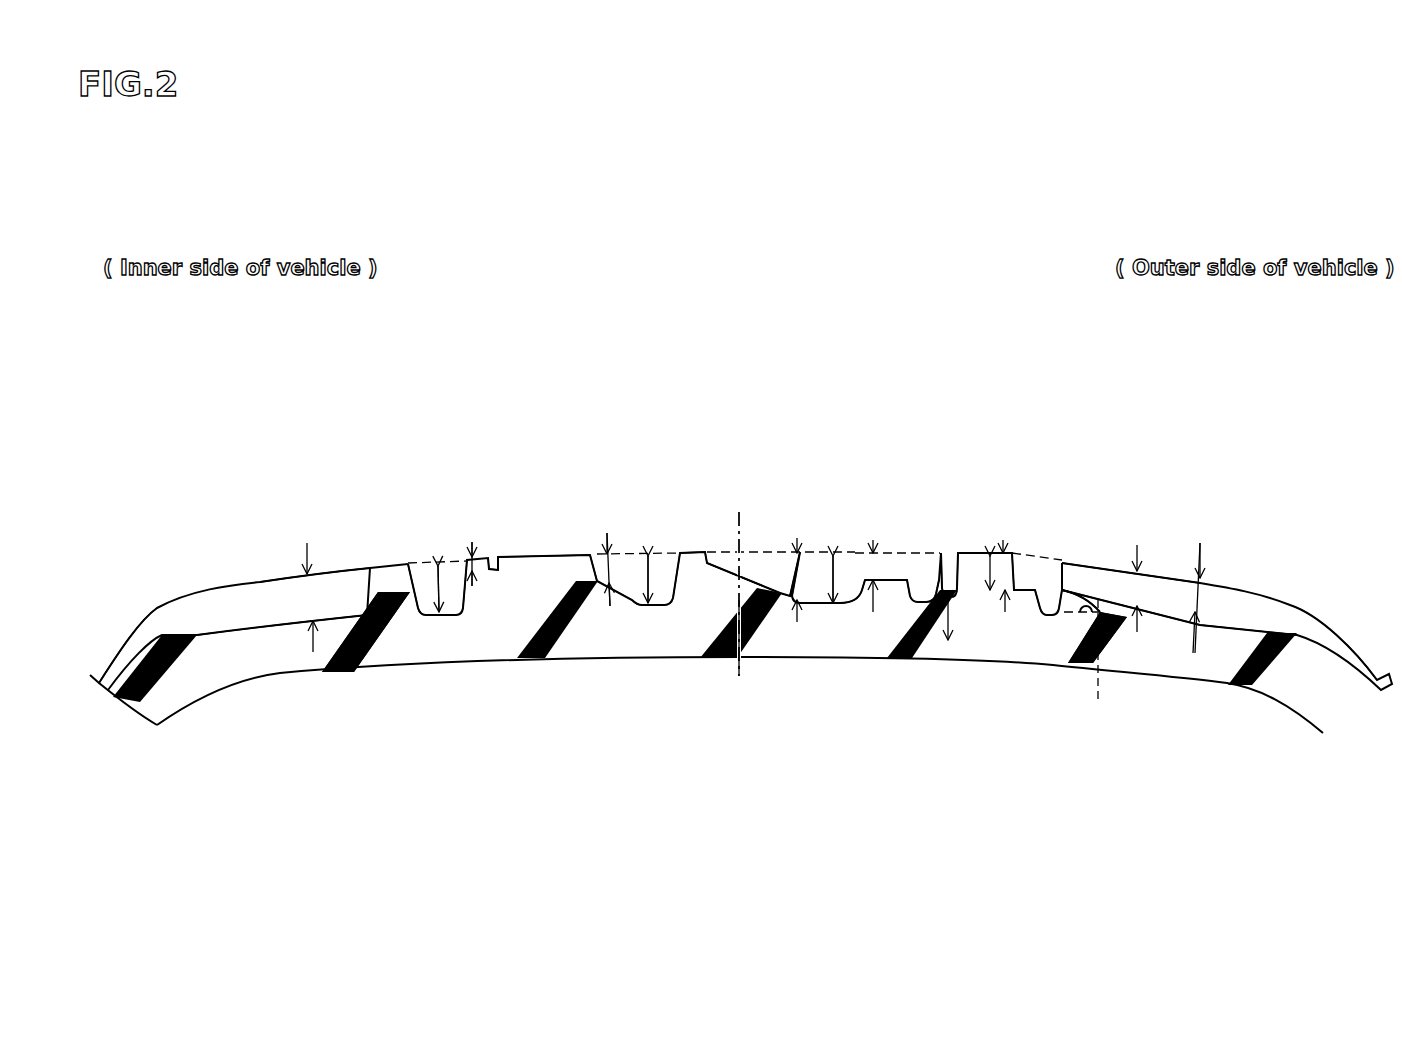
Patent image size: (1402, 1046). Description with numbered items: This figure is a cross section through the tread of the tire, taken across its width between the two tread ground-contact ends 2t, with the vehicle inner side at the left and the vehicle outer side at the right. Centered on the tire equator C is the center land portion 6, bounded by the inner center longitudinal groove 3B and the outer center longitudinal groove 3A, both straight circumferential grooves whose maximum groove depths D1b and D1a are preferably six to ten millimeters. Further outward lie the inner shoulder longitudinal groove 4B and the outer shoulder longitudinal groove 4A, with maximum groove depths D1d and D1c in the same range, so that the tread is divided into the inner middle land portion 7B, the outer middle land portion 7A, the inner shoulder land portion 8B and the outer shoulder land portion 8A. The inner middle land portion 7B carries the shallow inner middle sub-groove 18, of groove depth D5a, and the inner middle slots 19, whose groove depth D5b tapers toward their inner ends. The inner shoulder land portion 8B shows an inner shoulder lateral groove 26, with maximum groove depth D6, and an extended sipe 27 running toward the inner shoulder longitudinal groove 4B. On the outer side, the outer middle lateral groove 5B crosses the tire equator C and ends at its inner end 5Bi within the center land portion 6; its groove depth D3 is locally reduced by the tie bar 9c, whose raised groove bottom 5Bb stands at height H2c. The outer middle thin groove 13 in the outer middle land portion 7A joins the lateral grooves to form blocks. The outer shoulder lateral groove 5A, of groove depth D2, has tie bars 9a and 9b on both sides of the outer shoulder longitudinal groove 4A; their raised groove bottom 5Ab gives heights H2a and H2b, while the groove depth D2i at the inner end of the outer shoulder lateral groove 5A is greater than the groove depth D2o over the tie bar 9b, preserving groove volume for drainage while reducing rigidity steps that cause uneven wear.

The tread ground-contact end 2t is at (168, 620).
The inner shoulder lateral groove 26 is at (243, 622).
The extended sipe 27 is at (370, 590).
The inner shoulder land portion 8B is at (350, 527).
The inner shoulder longitudinal groove 4B is at (440, 562).
The inner middle sub-groove 18 is at (494, 560).
The inner middle land portion 7B is at (565, 532).
The inner middle slot 19 is at (603, 553).
The inner center longitudinal groove 3B is at (663, 582).
The inner end of outer middle lateral groove 5Bi is at (714, 572).
The center land portion 6 is at (748, 525).
The outer middle lateral groove 5B is at (790, 566).
The outer center longitudinal groove 3A is at (850, 582).
The tie bar 9c is at (897, 578).
The outer middle thin groove 13 is at (948, 552).
The outer middle land portion 7A is at (975, 532).
The tie bar 9b is at (1036, 565).
The outer shoulder longitudinal groove 4A is at (1053, 557).
The tie bar 9a is at (1113, 586).
The outer shoulder land portion 8A is at (1176, 532).
The outer shoulder lateral groove 5A is at (1236, 563).
The raised groove bottom 5Bb is at (892, 640).
The raised groove bottom 5Ab is at (1098, 660).
The tire equator C is at (737, 609).
The maximum groove depth D6 is at (300, 612).
The maximum groove depth D1d is at (427, 618).
The groove depth D5a is at (474, 604).
The groove depth D5b is at (604, 622).
The maximum groove depth D1b is at (646, 614).
The groove depth D3 is at (760, 650).
The maximum groove depth D1a is at (829, 612).
The groove depth at inner end D2i is at (946, 628).
The groove depth at tie bar D2o is at (986, 630).
The maximum groove depth D1c is at (1086, 645).
The groove depth D2 is at (1200, 656).
The tie bar height H2c is at (870, 615).
The tie bar height H2b is at (1010, 612).
The tie bar height H2a is at (1140, 632).